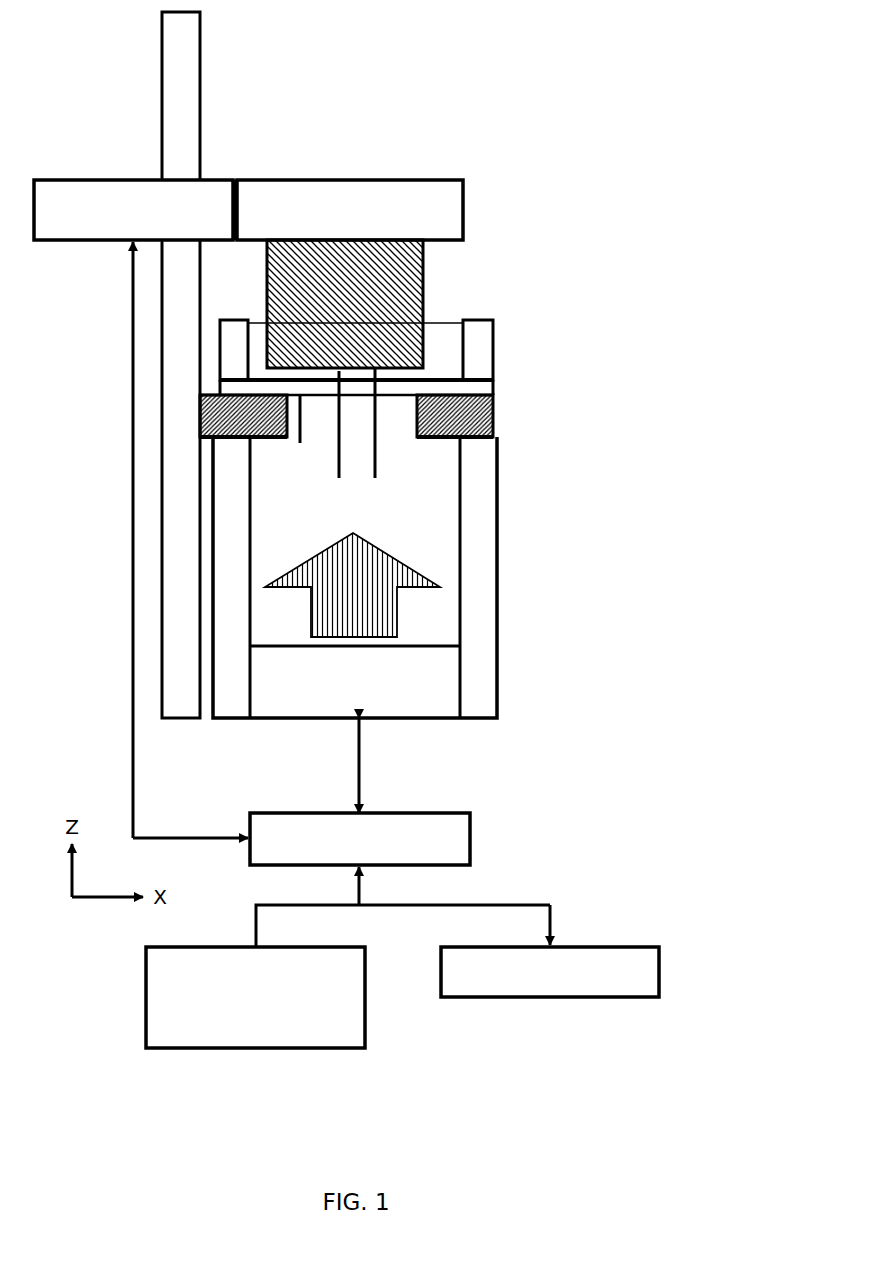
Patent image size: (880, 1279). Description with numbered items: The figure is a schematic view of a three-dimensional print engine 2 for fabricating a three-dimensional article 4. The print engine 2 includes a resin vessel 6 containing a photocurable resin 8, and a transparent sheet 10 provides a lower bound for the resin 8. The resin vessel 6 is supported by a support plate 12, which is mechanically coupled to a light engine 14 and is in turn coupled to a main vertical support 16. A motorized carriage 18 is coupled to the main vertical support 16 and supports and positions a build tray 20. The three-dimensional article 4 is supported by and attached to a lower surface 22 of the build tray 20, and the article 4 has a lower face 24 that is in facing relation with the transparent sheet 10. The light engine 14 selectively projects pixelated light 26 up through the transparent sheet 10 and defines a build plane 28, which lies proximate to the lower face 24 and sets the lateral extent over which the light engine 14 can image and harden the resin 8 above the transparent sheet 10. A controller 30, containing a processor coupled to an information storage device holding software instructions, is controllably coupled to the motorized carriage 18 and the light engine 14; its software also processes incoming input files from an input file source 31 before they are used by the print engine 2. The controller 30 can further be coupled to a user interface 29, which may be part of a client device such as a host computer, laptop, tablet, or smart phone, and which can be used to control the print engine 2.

The three-dimensional print engine 2 is at (516, 101).
The three-dimensional article 4 is at (407, 265).
The resin vessel 6 is at (477, 338).
The photocurable resin 8 is at (437, 335).
The transparent sheet 10 is at (302, 433).
The support plate 12 is at (492, 413).
The light engine 14 is at (438, 675).
The main vertical support 16 is at (202, 52).
The motorized carriage 18 is at (53, 192).
The build tray 20 is at (448, 203).
The lower surface 22 is at (253, 240).
The lower face 24 is at (376, 438).
The pixelated light 26 is at (400, 580).
The build plane 28 is at (337, 439).
The user interface 29 is at (659, 971).
The controller 30 is at (452, 838).
The input file source 31 is at (146, 998).